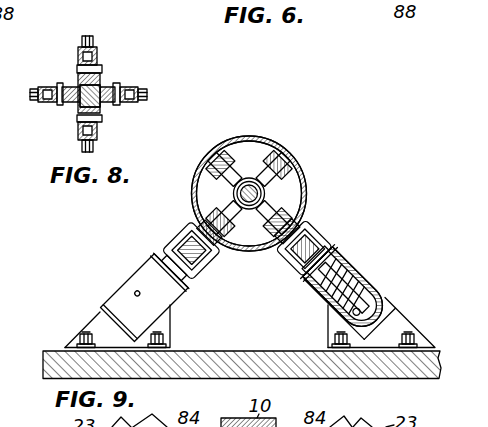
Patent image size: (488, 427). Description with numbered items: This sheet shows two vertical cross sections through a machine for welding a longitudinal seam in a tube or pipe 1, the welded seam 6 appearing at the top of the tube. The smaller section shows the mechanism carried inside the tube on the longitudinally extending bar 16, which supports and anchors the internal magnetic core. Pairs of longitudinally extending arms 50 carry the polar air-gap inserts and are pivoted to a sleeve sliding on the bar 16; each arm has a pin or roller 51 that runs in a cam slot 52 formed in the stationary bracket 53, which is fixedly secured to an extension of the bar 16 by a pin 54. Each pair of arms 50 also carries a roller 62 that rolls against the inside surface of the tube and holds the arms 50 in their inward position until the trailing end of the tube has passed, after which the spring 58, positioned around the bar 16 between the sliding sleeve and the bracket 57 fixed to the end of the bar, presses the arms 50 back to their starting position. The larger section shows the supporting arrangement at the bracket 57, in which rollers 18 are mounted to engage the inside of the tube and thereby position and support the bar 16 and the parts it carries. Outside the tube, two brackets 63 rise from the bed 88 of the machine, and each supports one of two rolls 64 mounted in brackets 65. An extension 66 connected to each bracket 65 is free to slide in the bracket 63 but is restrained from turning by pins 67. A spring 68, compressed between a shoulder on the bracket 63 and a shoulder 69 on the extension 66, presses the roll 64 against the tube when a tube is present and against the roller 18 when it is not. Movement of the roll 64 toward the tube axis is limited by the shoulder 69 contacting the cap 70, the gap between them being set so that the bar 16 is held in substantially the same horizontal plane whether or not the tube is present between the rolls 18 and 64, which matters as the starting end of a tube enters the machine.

In FIG. 9, the tube or pipe 1 is at (307, 191).
In FIG. 9, the welded seam 6 is at (258, 158).
In FIG. 8, the bar or rod 16 is at (100, 103).
In FIG. 9, the bar or rod 16 is at (240, 193).
In FIG. 9, the rollers 18 is at (214, 152).
In FIG. 8, the arms 50 is at (102, 60).
In FIG. 8, the pins or rollers 51 is at (78, 64).
In FIG. 8, the cam slots 52 is at (94, 49).
In FIG. 8, the stationary bracket 53 is at (76, 108).
In FIG. 8, the pin 54 is at (100, 86).
In FIG. 9, the bracket 57 is at (276, 158).
In FIG. 9, the spring 58 is at (249, 178).
In FIG. 8, the roller 62 is at (89, 35).
In FIG. 9, the brackets 63 is at (98, 320).
In FIG. 9, the rolls 64 is at (170, 232).
In FIG. 9, the brackets 65 is at (201, 278).
In FIG. 9, the extension 66 is at (168, 270).
In FIG. 9, the pins 67 is at (136, 304).
In FIG. 9, the spring 68 is at (325, 303).
In FIG. 9, the shoulder 69 is at (352, 270).
In FIG. 9, the cap 70 is at (186, 291).
In FIG. 9, the bed 88 is at (246, 356).